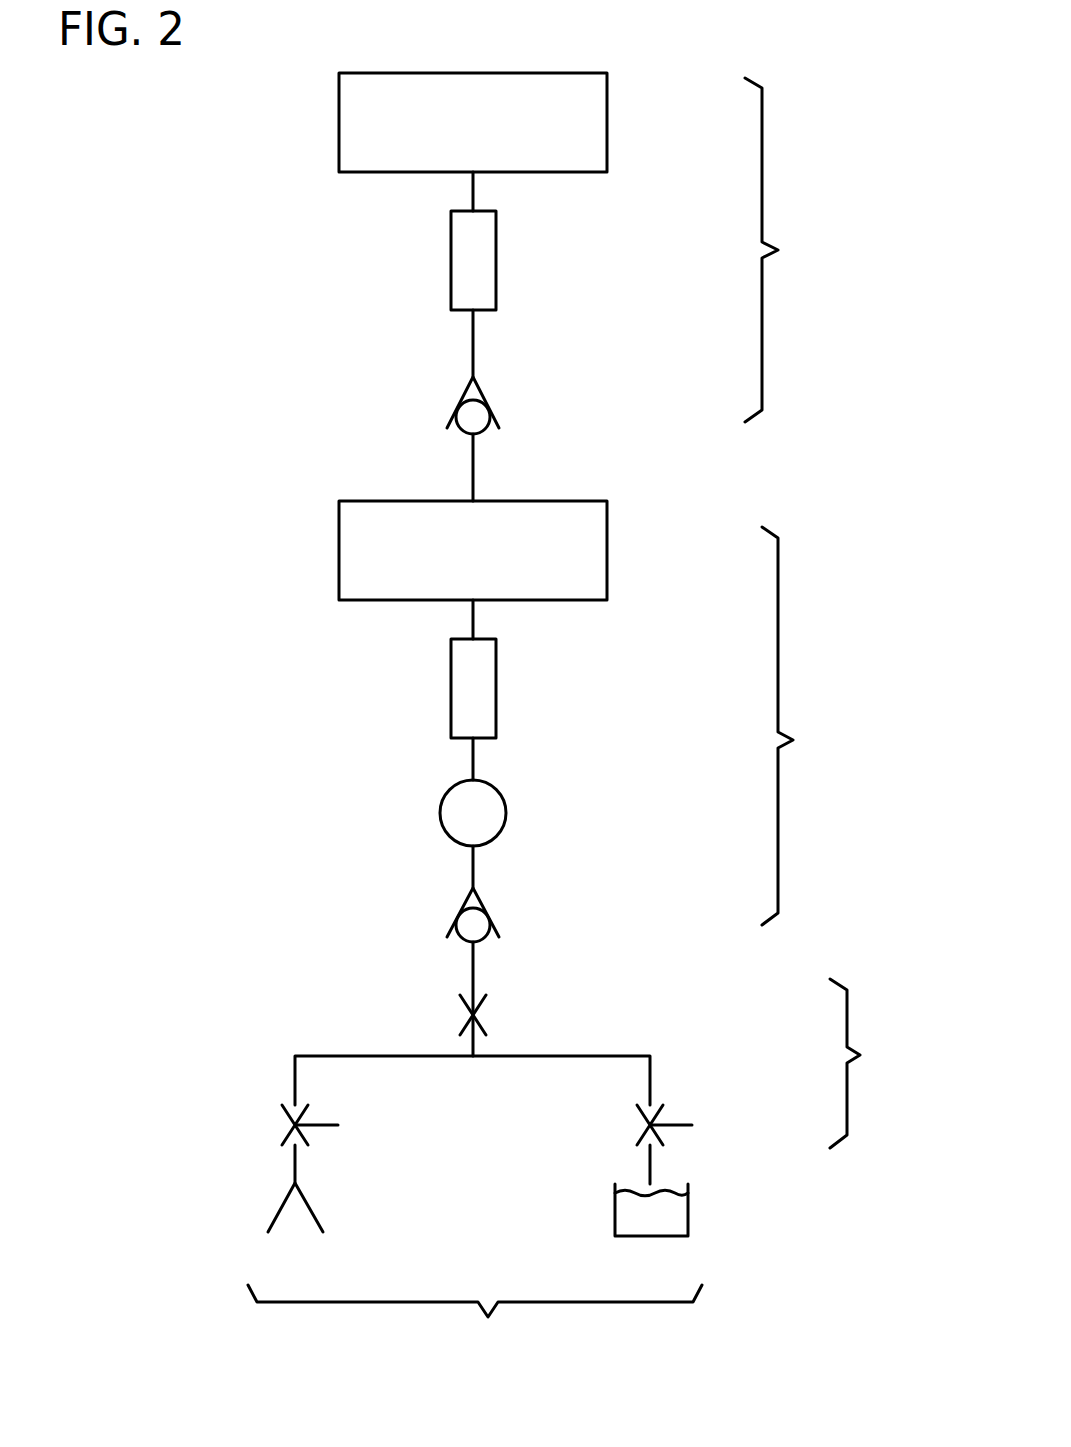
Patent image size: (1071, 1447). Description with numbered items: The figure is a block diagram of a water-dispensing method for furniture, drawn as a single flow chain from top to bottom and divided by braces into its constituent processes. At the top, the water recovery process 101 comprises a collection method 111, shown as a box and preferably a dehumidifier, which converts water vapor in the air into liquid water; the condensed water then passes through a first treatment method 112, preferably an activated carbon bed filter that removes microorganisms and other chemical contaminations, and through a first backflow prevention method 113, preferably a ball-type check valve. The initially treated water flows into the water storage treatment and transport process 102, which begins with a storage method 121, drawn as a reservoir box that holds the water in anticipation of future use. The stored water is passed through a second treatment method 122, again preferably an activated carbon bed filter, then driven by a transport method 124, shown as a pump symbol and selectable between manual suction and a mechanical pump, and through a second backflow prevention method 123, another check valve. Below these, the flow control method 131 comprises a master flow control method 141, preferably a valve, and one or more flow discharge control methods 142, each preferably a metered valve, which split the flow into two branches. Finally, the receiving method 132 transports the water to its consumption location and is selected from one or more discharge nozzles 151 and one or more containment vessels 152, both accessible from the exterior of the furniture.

The water recovery process 101 is at (593, 253).
The collection method 111 is at (612, 117).
The first treatment method 112 is at (502, 260).
The first backflow prevention method 113 is at (503, 410).
The water storage treatment and transport process 102 is at (596, 721).
The storage method 121 is at (612, 552).
The second treatment method 122 is at (505, 690).
The transport method 124 is at (517, 815).
The second backflow prevention method 123 is at (505, 920).
The flow control method 131 is at (601, 1081).
The master flow control method 141 is at (483, 1015).
The flow discharge control methods 142 is at (716, 1127).
The receiving method 132 is at (475, 1270).
The discharge nozzles 151 is at (298, 1222).
The containment vessels 152 is at (652, 1237).